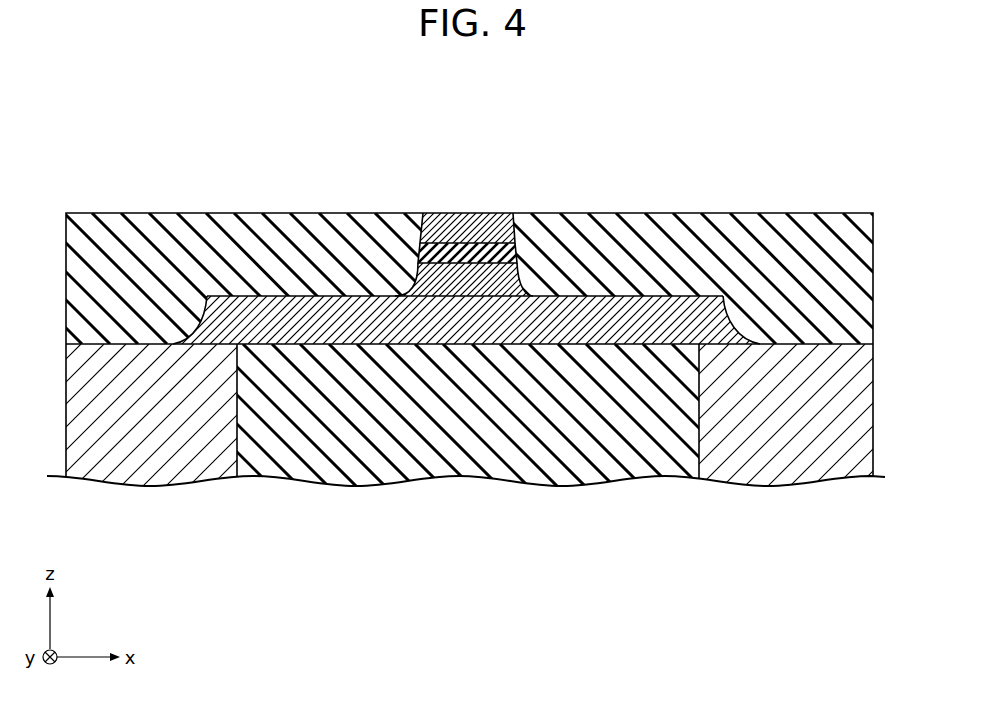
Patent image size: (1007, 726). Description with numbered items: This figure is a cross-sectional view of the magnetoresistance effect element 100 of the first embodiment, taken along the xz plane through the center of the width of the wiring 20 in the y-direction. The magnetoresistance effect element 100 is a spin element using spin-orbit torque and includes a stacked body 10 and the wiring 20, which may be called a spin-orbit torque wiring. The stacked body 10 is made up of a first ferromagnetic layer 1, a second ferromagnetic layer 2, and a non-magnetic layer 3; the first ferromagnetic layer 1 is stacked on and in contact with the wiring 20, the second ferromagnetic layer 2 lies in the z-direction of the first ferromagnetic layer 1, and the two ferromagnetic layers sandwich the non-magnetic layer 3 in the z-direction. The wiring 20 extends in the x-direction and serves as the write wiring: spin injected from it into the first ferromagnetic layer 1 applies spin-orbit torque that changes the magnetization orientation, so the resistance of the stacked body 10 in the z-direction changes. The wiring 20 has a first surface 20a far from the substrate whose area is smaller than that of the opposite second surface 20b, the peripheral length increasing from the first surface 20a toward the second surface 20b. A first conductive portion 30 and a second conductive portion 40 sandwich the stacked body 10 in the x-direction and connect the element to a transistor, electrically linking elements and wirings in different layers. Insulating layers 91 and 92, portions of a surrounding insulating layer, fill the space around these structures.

The magnetoresistance effect element 100 is at (769, 166).
The stacked body 10 is at (462, 196).
The first ferromagnetic layer 1 is at (498, 270).
The second ferromagnetic layer 2 is at (443, 225).
The non-magnetic layer 3 is at (470, 250).
The wiring 20 is at (469, 353).
The first surface 20a is at (263, 296).
The second surface 20b is at (324, 350).
The first conductive portion 30 is at (125, 468).
The second conductive portion 40 is at (800, 458).
The insulating layer 91 is at (598, 462).
The insulating layer 92 is at (598, 238).